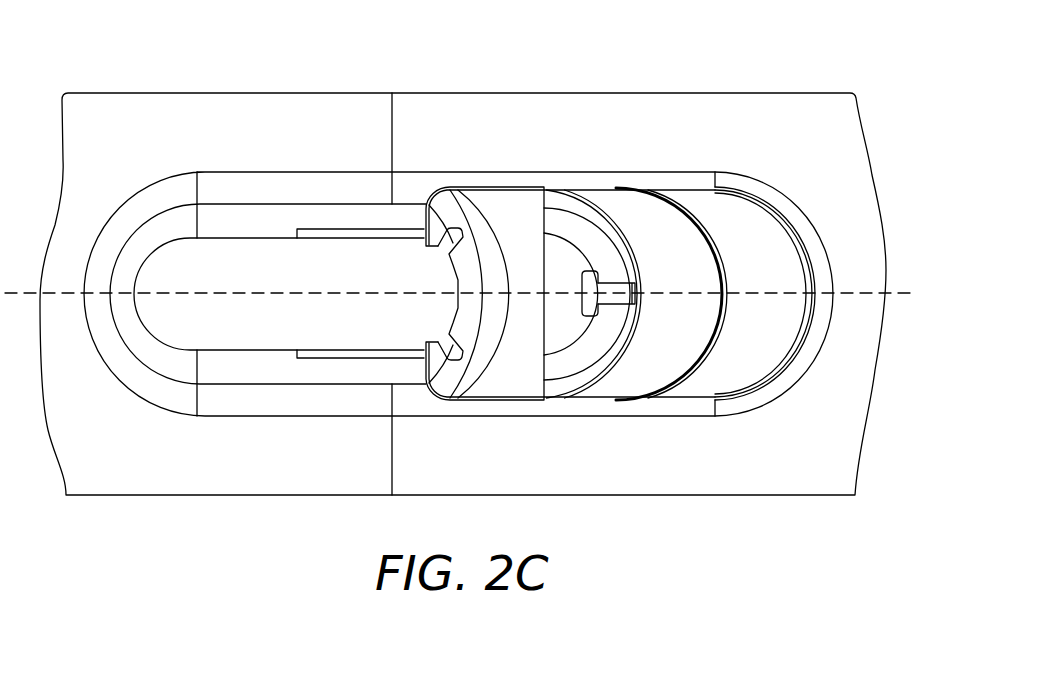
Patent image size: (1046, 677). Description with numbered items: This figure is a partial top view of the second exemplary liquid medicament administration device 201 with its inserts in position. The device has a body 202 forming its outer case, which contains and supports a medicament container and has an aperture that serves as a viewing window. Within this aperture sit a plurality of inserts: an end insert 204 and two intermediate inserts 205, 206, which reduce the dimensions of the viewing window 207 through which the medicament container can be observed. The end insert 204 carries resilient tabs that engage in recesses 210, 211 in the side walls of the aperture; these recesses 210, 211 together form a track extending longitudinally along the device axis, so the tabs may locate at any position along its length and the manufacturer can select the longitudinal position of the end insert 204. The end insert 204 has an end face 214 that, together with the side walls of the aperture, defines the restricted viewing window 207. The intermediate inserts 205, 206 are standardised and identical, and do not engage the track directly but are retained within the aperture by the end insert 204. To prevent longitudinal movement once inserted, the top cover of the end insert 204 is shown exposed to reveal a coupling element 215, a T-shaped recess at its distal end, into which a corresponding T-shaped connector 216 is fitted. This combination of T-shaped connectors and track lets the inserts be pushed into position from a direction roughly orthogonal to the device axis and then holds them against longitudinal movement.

The liquid medicament administration device 201 is at (725, 76).
The body 202 is at (677, 495).
The end insert 204 is at (503, 206).
The intermediate insert 205 is at (612, 206).
The intermediate insert 206 is at (730, 206).
The viewing window 207 is at (274, 262).
The recess 210 is at (360, 233).
The recess 211 is at (360, 355).
The end face 214 is at (468, 270).
The coupling element 215 is at (577, 292).
The T-shaped connector 216 is at (577, 296).